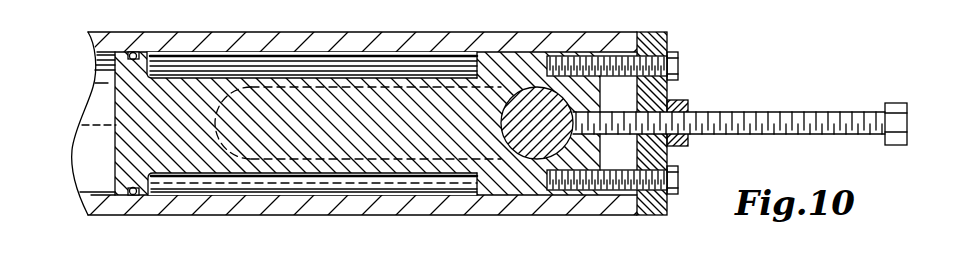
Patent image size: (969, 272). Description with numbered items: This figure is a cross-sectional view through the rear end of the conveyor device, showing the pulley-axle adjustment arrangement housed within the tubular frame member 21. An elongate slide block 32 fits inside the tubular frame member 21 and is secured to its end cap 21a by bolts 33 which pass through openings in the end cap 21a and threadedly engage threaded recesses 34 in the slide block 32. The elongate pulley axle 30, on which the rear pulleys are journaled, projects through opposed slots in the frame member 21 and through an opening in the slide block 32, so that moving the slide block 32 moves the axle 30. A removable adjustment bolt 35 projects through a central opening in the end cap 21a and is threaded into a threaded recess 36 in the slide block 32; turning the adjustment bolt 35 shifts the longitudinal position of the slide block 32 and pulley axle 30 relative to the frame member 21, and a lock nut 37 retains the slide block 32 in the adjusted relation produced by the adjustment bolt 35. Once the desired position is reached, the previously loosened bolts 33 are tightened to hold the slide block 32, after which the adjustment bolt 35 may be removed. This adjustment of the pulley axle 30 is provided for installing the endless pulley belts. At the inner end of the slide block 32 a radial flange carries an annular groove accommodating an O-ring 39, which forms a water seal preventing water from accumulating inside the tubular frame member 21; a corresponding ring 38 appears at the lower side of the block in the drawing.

The tubular frame member 21 is at (303, 32).
The end cap 21a is at (651, 216).
The pulley axle 30 is at (520, 104).
The slide block 32 is at (219, 77).
The bolts 33 is at (679, 64).
The threaded recesses 34 is at (570, 62).
The adjustment bolt 35 is at (786, 116).
The threaded recess 36 is at (597, 93).
The lock nut 37 is at (689, 144).
The O-ring 38 is at (112, 183).
The O-ring 39 is at (134, 50).